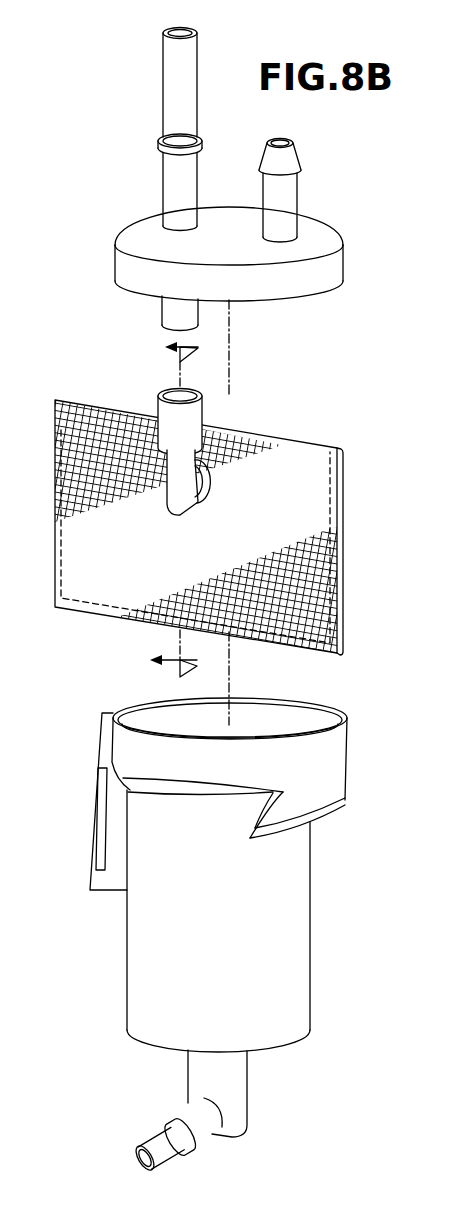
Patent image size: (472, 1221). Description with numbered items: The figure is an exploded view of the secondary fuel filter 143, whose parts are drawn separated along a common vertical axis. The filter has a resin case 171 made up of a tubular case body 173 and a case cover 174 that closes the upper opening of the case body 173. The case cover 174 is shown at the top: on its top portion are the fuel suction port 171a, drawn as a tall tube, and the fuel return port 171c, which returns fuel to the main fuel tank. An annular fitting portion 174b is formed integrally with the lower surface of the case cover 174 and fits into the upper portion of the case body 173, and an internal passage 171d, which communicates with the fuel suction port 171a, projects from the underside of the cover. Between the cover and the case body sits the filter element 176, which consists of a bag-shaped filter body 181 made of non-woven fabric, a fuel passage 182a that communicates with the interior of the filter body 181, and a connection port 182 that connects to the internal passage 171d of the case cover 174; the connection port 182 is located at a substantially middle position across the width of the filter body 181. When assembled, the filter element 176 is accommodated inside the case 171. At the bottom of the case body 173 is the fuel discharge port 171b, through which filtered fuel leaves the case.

The secondary fuel filter 143 is at (56, 120).
The case 171 is at (57, 866).
The fuel suction port 171a is at (172, 68).
The fuel discharge port 171b is at (162, 1140).
The fuel return port 171c is at (291, 197).
The internal passage 171d is at (170, 312).
The case body 173 is at (290, 904).
The case cover 174 is at (138, 240).
The annular fitting portion 174b is at (328, 268).
The filter element 176 is at (316, 428).
The filter body 181 is at (313, 483).
The connection port 182 is at (165, 418).
The fuel passage 182a is at (184, 392).